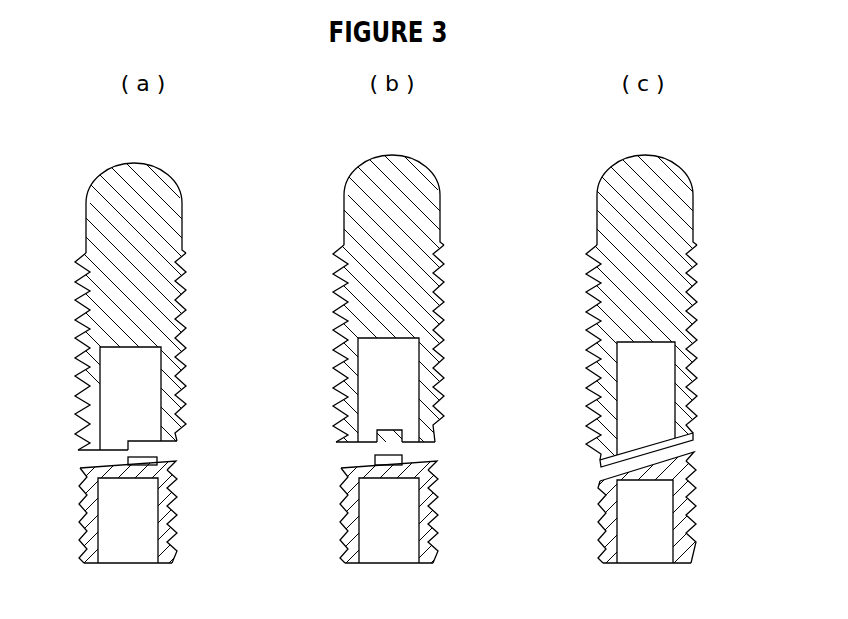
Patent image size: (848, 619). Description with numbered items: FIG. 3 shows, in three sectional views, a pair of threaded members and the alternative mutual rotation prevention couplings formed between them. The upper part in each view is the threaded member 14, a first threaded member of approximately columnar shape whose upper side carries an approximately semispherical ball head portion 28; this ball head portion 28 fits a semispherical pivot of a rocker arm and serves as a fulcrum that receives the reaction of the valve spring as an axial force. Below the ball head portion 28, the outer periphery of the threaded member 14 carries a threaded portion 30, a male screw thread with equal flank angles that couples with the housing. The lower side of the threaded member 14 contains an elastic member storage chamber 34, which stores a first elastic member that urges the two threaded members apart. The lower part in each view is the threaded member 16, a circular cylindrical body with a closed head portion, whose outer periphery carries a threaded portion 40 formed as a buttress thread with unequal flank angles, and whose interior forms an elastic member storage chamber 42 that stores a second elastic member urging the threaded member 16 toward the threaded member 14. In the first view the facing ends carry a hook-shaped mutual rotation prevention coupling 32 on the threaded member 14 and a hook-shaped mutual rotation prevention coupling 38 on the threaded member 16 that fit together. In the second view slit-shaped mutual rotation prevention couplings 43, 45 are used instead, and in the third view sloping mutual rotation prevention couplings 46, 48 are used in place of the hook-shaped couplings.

The threaded member 14 is at (394, 285).
The threaded member 16 is at (418, 535).
The ball head portion 28 is at (157, 170).
The threaded portion 30 is at (183, 325).
The hook-shaped mutual rotation prevention coupling 32 is at (178, 445).
The elastic member storage chamber 34 is at (123, 383).
The hook-shaped mutual rotation prevention coupling 38 is at (128, 461).
The threaded portion 40 is at (174, 556).
The elastic member storage chamber 42 is at (128, 553).
The slit-shaped mutual rotation prevention coupling 43 is at (404, 443).
The slit-shaped mutual rotation prevention coupling 45 is at (375, 458).
The sloping mutual rotation prevention coupling 46 is at (694, 434).
The sloping mutual rotation prevention coupling 48 is at (614, 463).